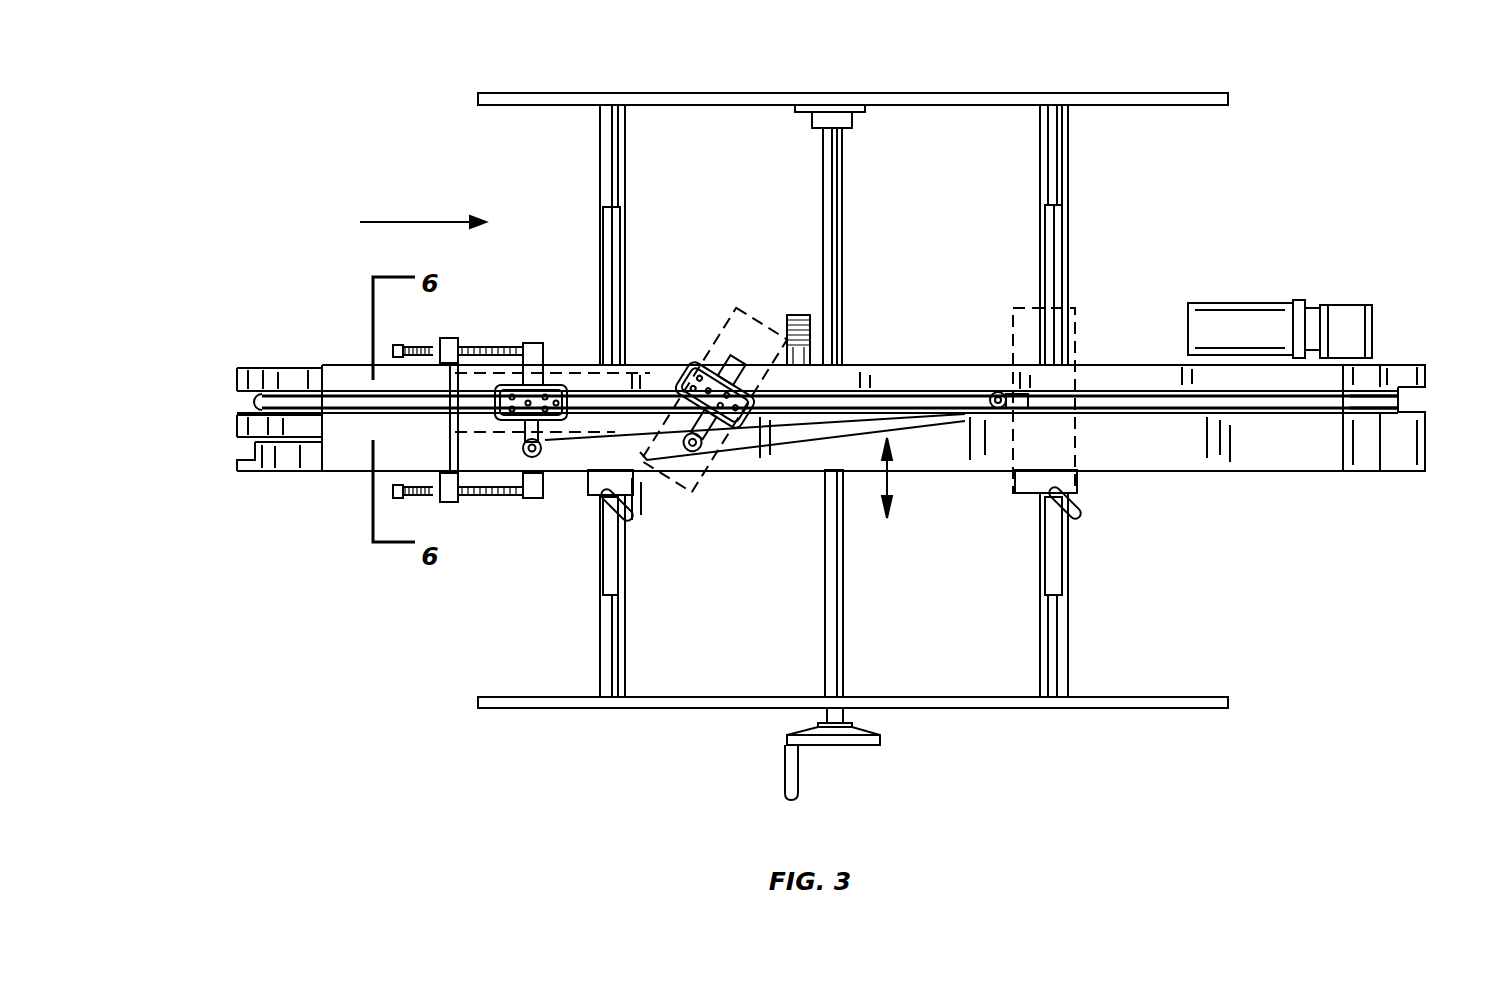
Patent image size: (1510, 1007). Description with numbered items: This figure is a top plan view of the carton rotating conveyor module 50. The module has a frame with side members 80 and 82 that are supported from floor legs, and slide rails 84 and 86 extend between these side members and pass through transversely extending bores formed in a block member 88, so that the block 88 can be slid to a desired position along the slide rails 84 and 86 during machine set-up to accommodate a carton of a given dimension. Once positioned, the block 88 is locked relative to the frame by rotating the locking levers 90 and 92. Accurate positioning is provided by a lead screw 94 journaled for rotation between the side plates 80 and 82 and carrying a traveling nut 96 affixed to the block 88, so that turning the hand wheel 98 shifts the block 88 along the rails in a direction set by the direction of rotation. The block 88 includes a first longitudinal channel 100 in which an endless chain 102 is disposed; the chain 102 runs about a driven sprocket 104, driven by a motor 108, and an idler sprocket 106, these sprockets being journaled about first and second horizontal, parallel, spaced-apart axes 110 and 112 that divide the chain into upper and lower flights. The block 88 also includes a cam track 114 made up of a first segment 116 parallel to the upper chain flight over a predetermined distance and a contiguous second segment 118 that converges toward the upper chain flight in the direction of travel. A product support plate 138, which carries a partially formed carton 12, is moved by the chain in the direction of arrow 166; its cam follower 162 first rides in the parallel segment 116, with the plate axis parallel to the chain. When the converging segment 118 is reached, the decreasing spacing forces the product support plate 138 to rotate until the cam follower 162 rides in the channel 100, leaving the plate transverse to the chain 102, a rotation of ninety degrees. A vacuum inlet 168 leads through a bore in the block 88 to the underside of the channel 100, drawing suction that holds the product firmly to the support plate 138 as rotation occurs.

The partially formed carton 12 is at (730, 308).
The conveyor module 50 is at (1280, 147).
The side member 80 is at (1120, 708).
The side member 82 is at (1055, 93).
The slide rail 84 is at (1068, 168).
The slide rail 86 is at (600, 158).
The block member 88 is at (1195, 472).
The locking lever 90 is at (1082, 519).
The locking lever 92 is at (642, 527).
The threaded adjustment rod 94 is at (842, 183).
The traveling nut 96 is at (810, 466).
The hand wheel 98 is at (845, 746).
The longitudinal channel 100 is at (1420, 405).
The endless chain 102 is at (1125, 398).
The driven sprocket 104 is at (1382, 392).
The idler sprocket 106 is at (285, 402).
The motor 108 is at (1222, 303).
The horizontal axis 110 is at (1345, 440).
The horizontal axis 112 is at (323, 386).
The cam track 114 is at (230, 461).
The first segment 116 is at (348, 458).
The second segment 118 is at (752, 440).
The product support plate 138 is at (555, 385).
The cam follower 162 is at (540, 456).
The direction of travel arrow 166 is at (408, 217).
The vacuum inlet 168 is at (792, 314).